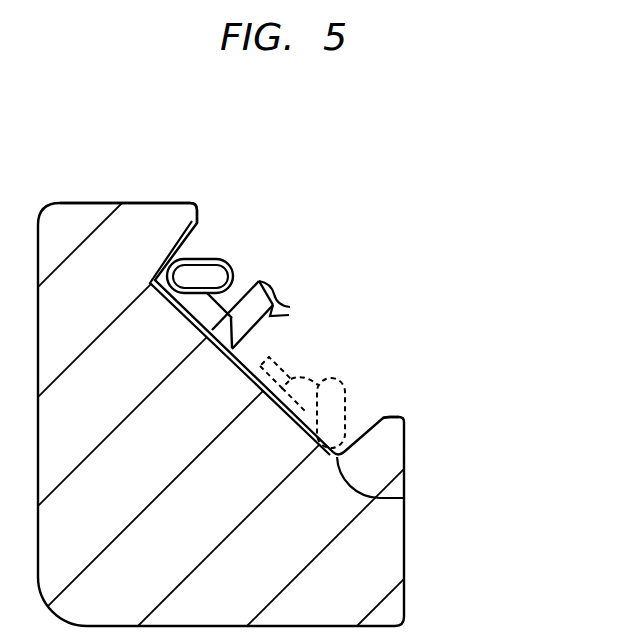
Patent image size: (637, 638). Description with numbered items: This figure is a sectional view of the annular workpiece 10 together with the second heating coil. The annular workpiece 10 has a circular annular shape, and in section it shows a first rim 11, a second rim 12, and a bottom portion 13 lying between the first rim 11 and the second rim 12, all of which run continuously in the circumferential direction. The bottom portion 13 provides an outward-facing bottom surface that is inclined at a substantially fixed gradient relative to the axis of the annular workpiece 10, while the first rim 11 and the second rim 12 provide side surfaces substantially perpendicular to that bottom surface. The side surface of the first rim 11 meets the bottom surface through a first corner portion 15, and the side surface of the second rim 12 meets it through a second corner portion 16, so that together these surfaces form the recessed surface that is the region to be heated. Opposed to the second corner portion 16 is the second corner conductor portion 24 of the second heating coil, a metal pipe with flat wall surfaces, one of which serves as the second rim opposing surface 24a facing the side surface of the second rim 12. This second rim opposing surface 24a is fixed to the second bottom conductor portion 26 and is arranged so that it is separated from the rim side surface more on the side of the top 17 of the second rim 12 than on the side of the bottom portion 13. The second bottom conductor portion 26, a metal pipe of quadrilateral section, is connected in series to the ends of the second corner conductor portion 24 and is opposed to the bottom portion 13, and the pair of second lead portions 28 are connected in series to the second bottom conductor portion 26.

The annular workpiece 10 is at (72, 203).
The first rim 11 is at (406, 440).
The second rim 12 is at (168, 203).
The bottom portion 13 is at (290, 382).
The first corner portion 15 is at (405, 498).
The second corner portion 16 is at (155, 280).
The top of the second rim 17 is at (199, 214).
The second corner conductor portion 24 is at (237, 270).
The second rim opposing surface 24a is at (200, 257).
The second bottom conductor portion 26 is at (240, 293).
The second lead portions 28 is at (298, 312).